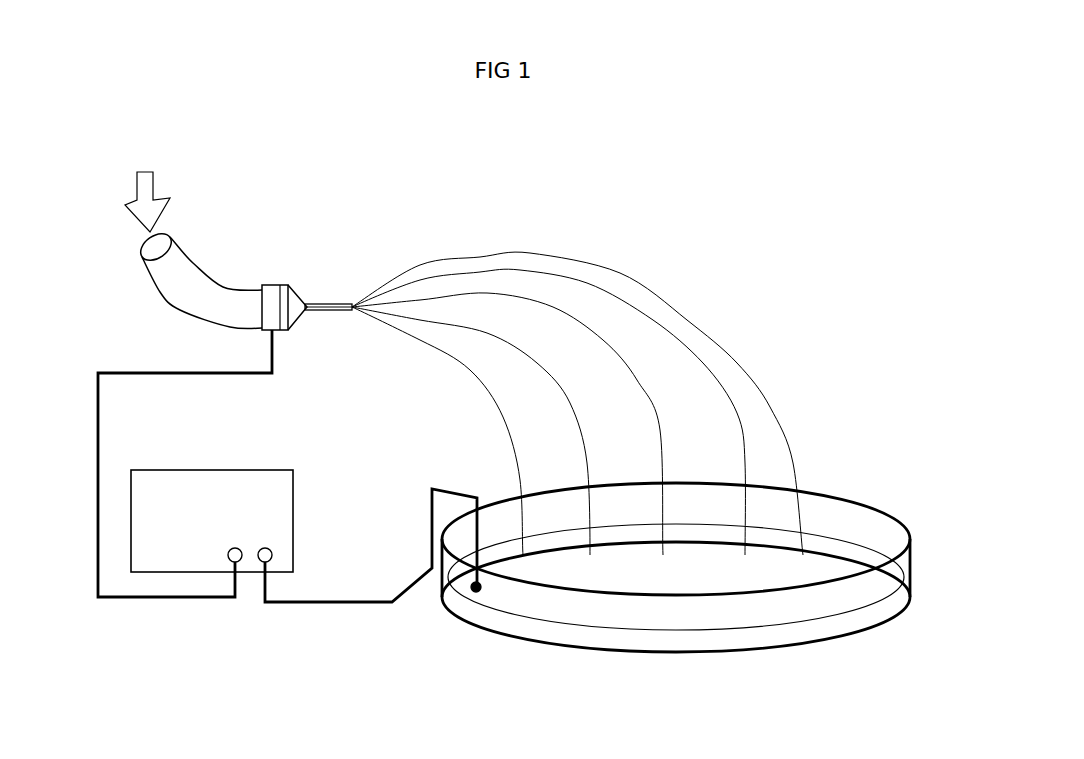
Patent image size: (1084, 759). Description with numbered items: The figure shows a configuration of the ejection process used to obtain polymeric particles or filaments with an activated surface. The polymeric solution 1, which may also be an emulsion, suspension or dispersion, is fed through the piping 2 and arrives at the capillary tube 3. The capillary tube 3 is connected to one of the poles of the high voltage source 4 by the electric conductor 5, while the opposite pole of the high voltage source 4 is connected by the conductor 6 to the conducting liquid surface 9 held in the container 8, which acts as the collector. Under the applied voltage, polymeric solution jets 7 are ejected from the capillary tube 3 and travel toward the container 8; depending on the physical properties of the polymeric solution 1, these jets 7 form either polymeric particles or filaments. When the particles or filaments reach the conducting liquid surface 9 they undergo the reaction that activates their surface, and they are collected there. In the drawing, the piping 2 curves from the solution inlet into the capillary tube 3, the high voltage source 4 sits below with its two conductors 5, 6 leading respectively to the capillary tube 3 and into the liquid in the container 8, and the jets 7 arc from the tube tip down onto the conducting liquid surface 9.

The polymeric solution 1 is at (228, 145).
The piping 2 is at (242, 286).
The capillary tube 3 is at (329, 299).
The high voltage source 4 is at (238, 455).
The electric conductor 5 is at (172, 604).
The conductor 6 is at (301, 607).
The polymeric solution jets 7 is at (539, 249).
The container 8 is at (773, 654).
The conducting liquid surface 9 is at (843, 543).